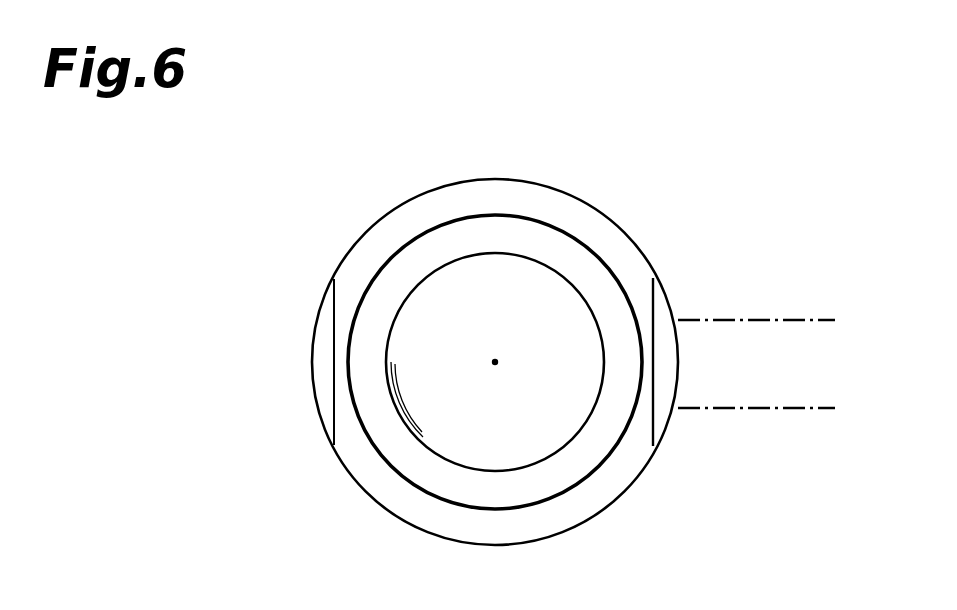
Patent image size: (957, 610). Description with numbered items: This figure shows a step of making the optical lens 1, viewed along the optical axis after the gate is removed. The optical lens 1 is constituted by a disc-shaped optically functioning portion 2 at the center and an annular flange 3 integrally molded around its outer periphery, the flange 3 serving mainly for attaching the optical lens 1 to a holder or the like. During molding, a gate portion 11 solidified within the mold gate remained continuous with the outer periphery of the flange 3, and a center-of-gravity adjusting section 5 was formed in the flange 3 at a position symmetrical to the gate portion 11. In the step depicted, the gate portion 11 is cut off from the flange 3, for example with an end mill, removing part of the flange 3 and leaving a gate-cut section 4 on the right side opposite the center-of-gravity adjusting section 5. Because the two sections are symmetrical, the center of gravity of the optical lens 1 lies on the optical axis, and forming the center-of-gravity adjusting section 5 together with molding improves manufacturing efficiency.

The optical lens 1 is at (677, 192).
The optically functioning portion 2 is at (543, 422).
The flange 3 is at (363, 261).
The gate-cut section 4 is at (660, 314).
The center-of-gravity adjusting section 5 is at (327, 370).
The gate portion 11 is at (775, 412).